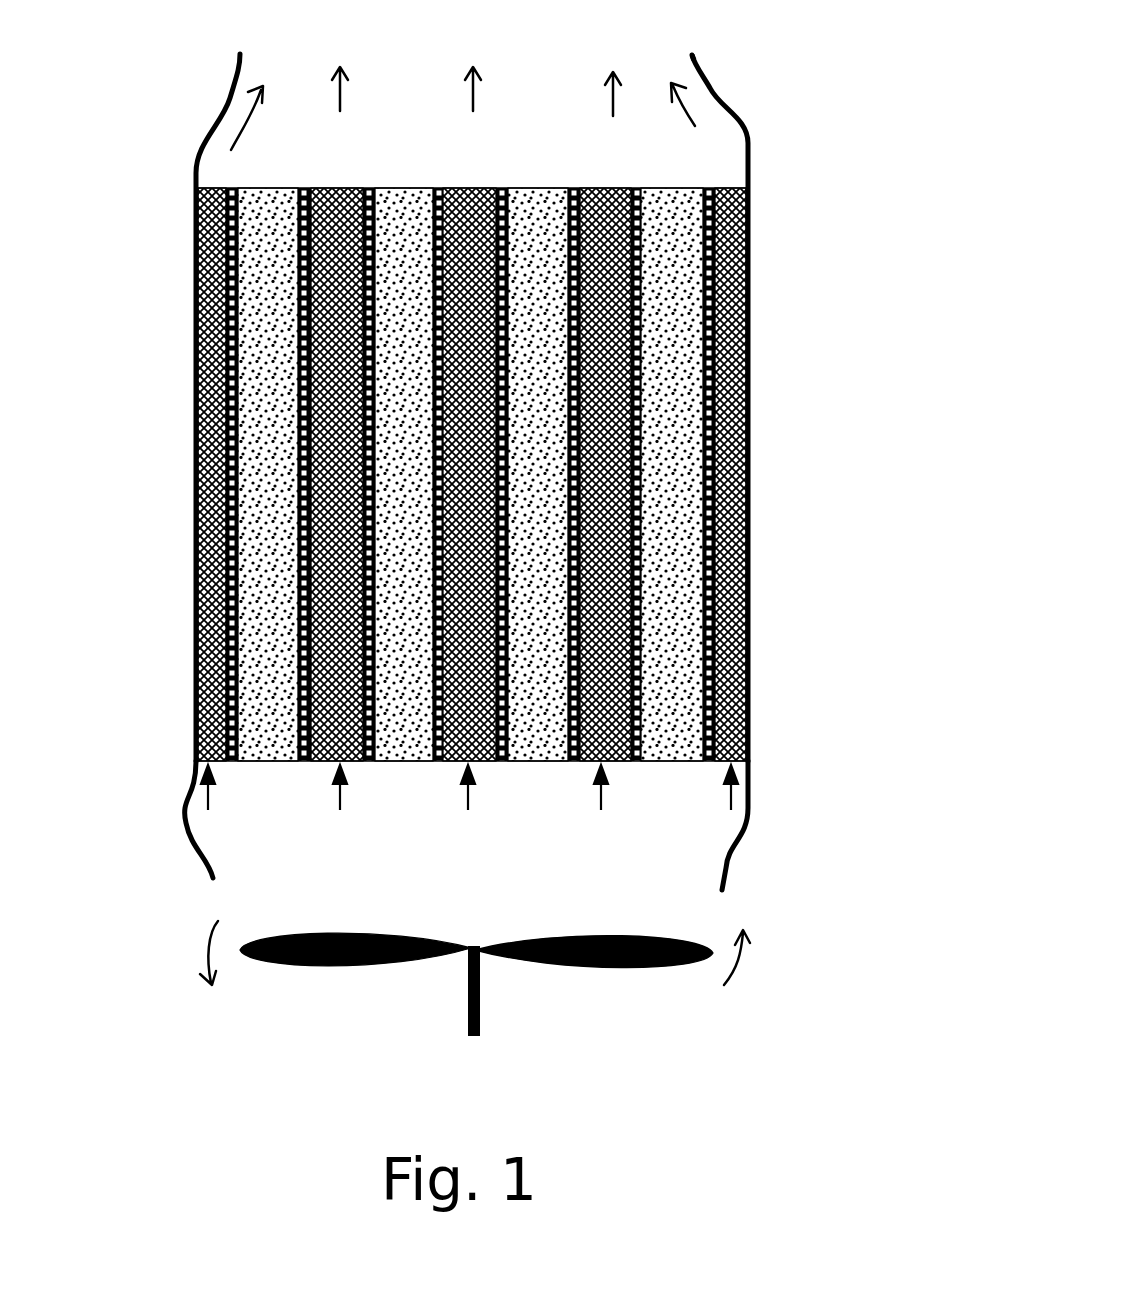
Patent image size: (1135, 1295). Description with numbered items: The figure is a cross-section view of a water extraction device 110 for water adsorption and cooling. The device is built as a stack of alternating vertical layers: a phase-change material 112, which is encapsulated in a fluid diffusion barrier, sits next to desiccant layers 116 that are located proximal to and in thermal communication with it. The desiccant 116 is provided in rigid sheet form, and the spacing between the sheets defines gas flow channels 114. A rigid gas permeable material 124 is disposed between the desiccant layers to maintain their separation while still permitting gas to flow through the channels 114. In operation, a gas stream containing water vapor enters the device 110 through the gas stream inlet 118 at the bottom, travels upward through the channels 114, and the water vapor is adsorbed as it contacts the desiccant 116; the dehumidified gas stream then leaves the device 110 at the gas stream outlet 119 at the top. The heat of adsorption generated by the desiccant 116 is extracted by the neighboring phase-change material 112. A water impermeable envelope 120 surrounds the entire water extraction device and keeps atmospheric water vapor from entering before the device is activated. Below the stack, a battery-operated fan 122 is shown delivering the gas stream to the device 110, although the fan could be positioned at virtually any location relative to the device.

The water extraction device 110 is at (491, 472).
The phase-change material 112 is at (388, 196).
The gas flow channels 114 is at (577, 758).
The desiccant layers 116 is at (707, 195).
The gas stream inlet 118 is at (735, 818).
The gas stream outlet 119 is at (688, 62).
The water impermeable envelope 120 is at (402, 466).
The battery-operated fan 122 is at (472, 1005).
The rigid gas permeable material 124 is at (622, 197).